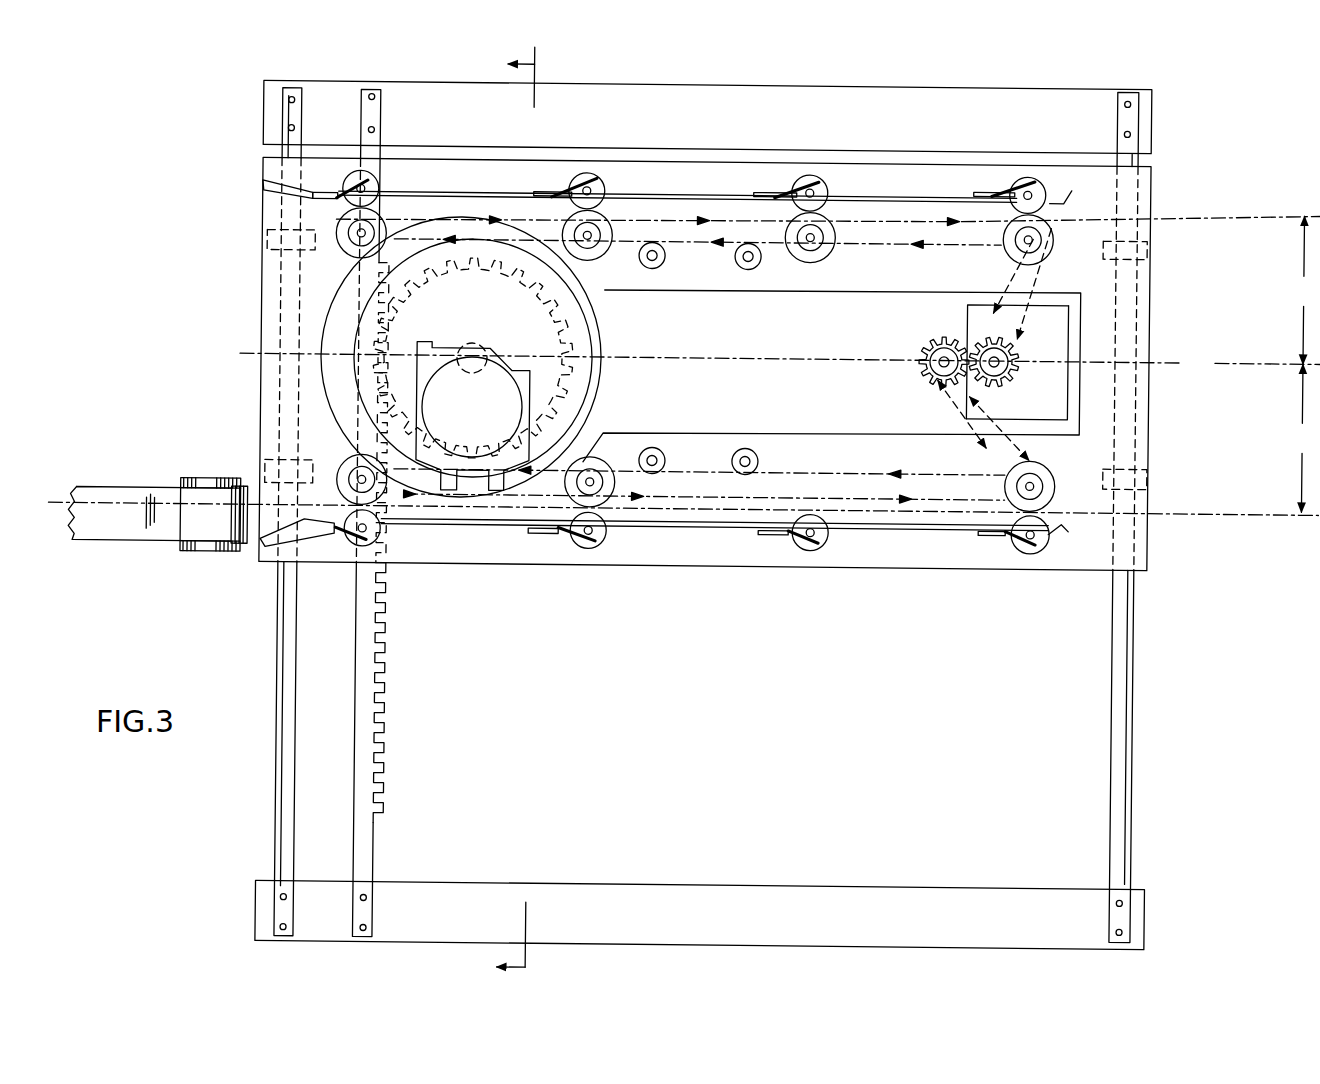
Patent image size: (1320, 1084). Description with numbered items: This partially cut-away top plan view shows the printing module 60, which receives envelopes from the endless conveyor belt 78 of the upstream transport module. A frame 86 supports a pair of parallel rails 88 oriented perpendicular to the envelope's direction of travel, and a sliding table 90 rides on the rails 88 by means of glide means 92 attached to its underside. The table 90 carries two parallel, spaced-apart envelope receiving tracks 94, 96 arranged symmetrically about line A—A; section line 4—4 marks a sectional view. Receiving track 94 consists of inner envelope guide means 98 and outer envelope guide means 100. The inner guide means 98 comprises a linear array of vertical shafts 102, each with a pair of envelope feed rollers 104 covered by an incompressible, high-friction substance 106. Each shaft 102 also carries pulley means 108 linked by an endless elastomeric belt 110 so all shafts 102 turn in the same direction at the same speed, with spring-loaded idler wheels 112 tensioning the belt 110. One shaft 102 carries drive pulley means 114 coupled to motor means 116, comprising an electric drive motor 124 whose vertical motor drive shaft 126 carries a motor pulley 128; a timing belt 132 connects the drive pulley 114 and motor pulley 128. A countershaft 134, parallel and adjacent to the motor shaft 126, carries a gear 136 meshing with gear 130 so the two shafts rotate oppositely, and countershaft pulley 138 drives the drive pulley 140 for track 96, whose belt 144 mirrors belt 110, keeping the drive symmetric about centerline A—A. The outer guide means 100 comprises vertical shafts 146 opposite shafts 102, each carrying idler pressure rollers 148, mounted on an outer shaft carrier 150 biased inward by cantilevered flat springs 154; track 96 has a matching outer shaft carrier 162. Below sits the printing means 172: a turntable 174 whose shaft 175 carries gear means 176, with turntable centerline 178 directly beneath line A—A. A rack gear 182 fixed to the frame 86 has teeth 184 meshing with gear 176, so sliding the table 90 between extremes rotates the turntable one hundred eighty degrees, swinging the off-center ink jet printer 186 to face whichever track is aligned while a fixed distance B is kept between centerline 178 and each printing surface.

The printing module 60 is at (1240, 122).
The endless conveyor belt 78 is at (145, 488).
The frame 86 is at (960, 890).
The parallel rails 88 is at (1125, 690).
The sliding table 90 is at (1146, 187).
The engaging glide means 92 is at (265, 240).
The envelope receiving track 94 is at (922, 192).
The envelope receiving track 96 is at (958, 500).
The inner envelope guide means 98 is at (897, 235).
The outer envelope guide means 100 is at (740, 184).
The vertical shafts 102 is at (355, 232).
The envelope feed rollers 104 is at (358, 245).
The incompressible high-friction substance 106 is at (345, 247).
The pulley means 108 is at (830, 240).
The endless elastomeric belt 110 is at (918, 228).
The spring loaded polymeric idler wheels 112 is at (660, 262).
The drive pulley means 114 is at (1013, 257).
The motor means 116 is at (905, 383).
The electric drive motor 124 is at (1075, 410).
The motor drive shaft 126 is at (1003, 357).
The motor pulley 128 is at (997, 383).
The gear 130 is at (1015, 368).
The timing belt 132 is at (1070, 322).
The countershaft 134 is at (945, 373).
The gear 136 is at (928, 347).
The countershaft pulley 138 is at (945, 352).
The drive pulley 140 is at (1035, 432).
The mirror image belt 144 is at (848, 462).
The vertical shafts 146 is at (383, 192).
The pressure roller means 148 is at (350, 188).
The outer shaft carrier 150 is at (446, 194).
The cantilevered flat springs 154 is at (318, 190).
The outer shaft carrier 162 is at (722, 530).
The printing means 172 is at (594, 388).
The turntable 174 is at (497, 413).
The shaft 175 is at (468, 342).
The turntable gear 176 is at (596, 373).
The turntable centerline 178 is at (470, 360).
The rack gear 182 is at (365, 755).
The rack gear teeth 184 is at (388, 640).
The ink jet printer 186 is at (556, 440).
The section line 4- 4 is at (539, 515).
The centerline A is at (765, 359).
The fixed distance B is at (1305, 364).